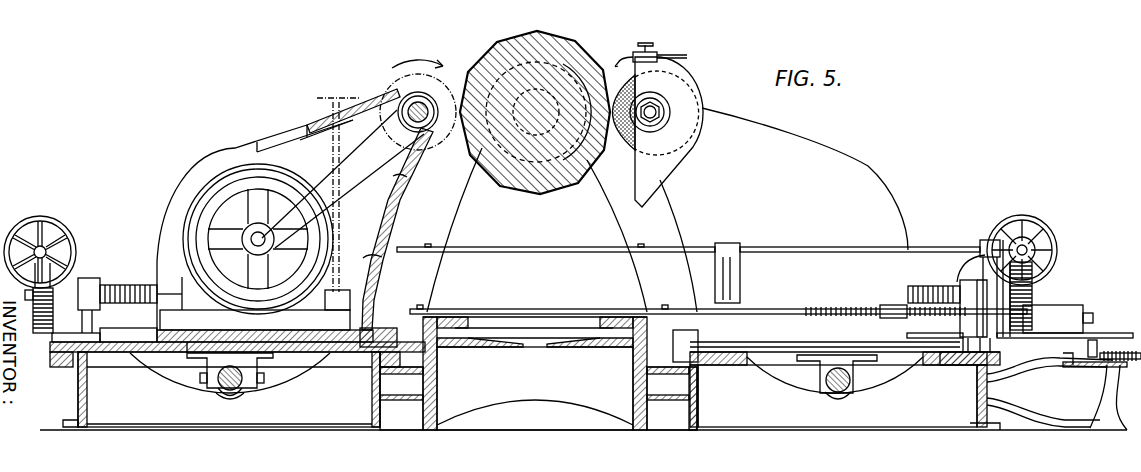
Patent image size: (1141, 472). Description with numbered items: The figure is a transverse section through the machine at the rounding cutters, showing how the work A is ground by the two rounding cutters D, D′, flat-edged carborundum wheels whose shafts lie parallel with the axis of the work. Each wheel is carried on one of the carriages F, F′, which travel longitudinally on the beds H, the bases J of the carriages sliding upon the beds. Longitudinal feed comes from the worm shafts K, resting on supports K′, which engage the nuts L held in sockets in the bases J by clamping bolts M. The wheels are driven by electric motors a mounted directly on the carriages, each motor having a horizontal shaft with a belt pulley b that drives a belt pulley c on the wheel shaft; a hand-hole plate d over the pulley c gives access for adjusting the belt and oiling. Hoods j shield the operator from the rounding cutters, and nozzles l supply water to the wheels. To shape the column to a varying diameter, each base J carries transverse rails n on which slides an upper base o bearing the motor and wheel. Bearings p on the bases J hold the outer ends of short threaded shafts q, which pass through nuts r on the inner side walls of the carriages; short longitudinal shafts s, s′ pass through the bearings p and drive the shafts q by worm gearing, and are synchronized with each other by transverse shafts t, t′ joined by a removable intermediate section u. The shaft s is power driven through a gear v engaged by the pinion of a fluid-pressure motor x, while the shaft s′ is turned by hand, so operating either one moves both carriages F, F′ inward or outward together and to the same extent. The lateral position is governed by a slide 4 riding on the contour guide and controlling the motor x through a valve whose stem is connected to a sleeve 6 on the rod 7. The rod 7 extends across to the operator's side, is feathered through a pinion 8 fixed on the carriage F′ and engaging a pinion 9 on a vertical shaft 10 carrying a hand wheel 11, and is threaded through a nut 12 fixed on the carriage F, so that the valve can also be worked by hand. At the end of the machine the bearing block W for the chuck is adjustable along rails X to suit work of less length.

The work A is at (566, 50).
The electric motor a is at (205, 188).
The belt pulley b is at (272, 233).
The belt pulley c is at (391, 141).
The hand-hole plate d is at (440, 78).
The hood j is at (694, 92).
The nozzle l is at (627, 57).
The carriage F is at (805, 179).
The carriage F′ is at (242, 153).
The rounding cutter D is at (592, 178).
The rounding cutter D′ is at (470, 158).
The bearing block W is at (693, 316).
The rails X is at (477, 323).
The intermediate section u is at (505, 246).
The shaft t is at (800, 247).
The shaft t′ is at (692, 258).
The longitudinal shaft s is at (1048, 234).
The longitudinal shaft s′ is at (42, 228).
The gear v is at (1028, 224).
The fluid-pressure operated motor x is at (960, 263).
The bearing p is at (81, 278).
The short shaft q is at (108, 284).
The nut r is at (170, 292).
The rails n is at (141, 341).
The upper base o is at (180, 334).
The base J is at (46, 366).
The bed H is at (231, 389).
The nut L is at (257, 362).
The clamping bolt M is at (261, 386).
The worm shaft K is at (222, 393).
The support K′ is at (233, 398).
The slide 4 is at (1113, 339).
The sleeve 6 is at (1058, 319).
The rod 7 is at (778, 313).
The pinion 8 is at (229, 399).
The pinion 9 is at (306, 286).
The vertical shaft 10 is at (349, 191).
The hand wheel 11 is at (346, 189).
The nut 12 is at (893, 297).